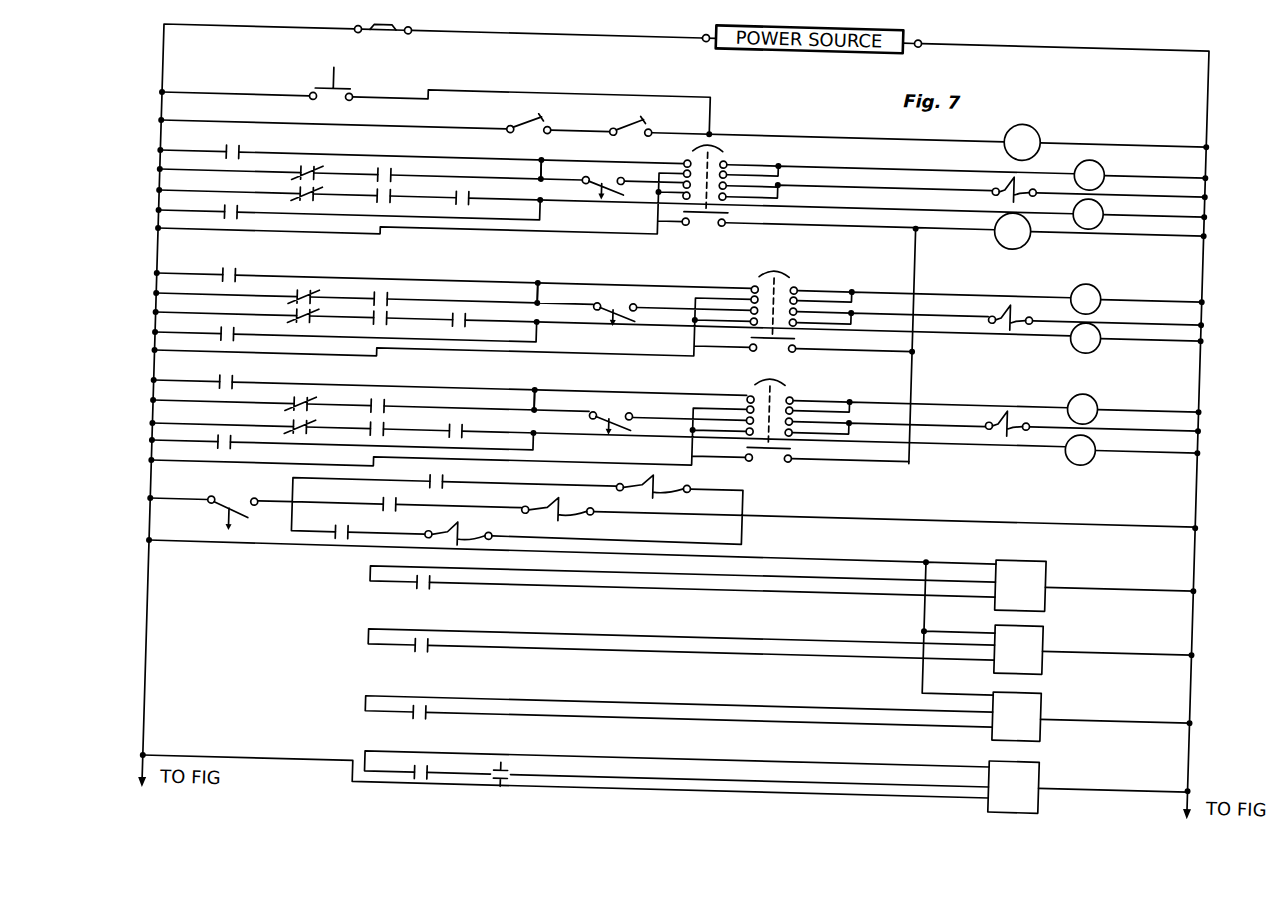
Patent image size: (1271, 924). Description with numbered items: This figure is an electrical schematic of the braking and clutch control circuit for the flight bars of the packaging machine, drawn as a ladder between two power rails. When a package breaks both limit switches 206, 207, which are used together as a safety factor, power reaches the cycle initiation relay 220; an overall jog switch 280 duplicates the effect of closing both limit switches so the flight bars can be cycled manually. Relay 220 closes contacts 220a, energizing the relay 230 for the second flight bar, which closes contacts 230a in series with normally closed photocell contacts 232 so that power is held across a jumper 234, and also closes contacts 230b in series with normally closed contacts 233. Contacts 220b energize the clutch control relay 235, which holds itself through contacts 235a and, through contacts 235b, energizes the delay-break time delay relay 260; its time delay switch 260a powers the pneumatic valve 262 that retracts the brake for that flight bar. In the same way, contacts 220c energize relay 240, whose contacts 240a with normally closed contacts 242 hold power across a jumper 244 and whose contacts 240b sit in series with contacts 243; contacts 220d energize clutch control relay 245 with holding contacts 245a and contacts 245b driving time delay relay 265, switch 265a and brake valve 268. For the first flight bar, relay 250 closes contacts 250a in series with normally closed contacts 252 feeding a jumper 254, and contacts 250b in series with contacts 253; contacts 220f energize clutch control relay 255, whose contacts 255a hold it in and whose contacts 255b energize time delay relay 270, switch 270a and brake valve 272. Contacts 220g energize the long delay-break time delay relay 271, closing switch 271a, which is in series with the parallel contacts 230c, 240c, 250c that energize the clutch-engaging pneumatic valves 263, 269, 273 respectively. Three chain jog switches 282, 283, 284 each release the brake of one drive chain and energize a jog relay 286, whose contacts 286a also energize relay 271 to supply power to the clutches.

The overall jog switch 280 is at (313, 86).
The limit switch 206 is at (534, 113).
The limit switch 207 is at (625, 111).
The cycle initiation relay 220 is at (1040, 108).
The contacts 220a is at (231, 143).
The contacts 220b is at (232, 218).
The contacts 220c is at (236, 266).
The contacts 220d is at (233, 339).
The contacts 220f is at (232, 443).
The contacts 220g is at (441, 752).
The relay 230 is at (1106, 143).
The contacts 230a is at (385, 162).
The contacts 230b is at (391, 205).
The contacts 230c is at (457, 470).
The normally closed contacts 232 is at (309, 162).
The normally closed contacts 233 is at (313, 198).
The jumper 234 is at (543, 150).
The clutch control relay 235 is at (1107, 183).
The contacts 235a is at (466, 182).
The contacts 235b is at (439, 583).
The relay 240 is at (1106, 266).
The contacts 240a is at (316, 286).
The contacts 240b is at (391, 320).
The contacts 240c is at (401, 494).
The normally closed contacts 242 is at (383, 289).
The normally closed contacts 243 is at (306, 321).
The jumper 244 is at (548, 284).
The clutch control relay 245 is at (1106, 325).
The contacts 245a is at (467, 321).
The contacts 245b is at (438, 647).
The relay 250 is at (1082, 373).
The contacts 250a is at (391, 395).
The contacts 250b is at (393, 425).
The contacts 250c is at (350, 531).
The normally closed contacts 252 is at (298, 406).
The normally closed contacts 253 is at (308, 432).
The jumper 254 is at (550, 392).
The clutch control relay 255 is at (1104, 438).
The contacts 255a is at (468, 418).
The contacts 255b is at (437, 713).
The time delay relay 260 is at (1061, 546).
The time delay switch 260a is at (608, 166).
The pneumatic valve 262 is at (996, 173).
The pneumatic valve 263 is at (689, 470).
The time delay relay 265 is at (1060, 606).
The time delay switch 265a is at (621, 304).
The pneumatic valve 268 is at (996, 296).
The pneumatic valve 269 is at (596, 508).
The time delay relay 270 is at (1060, 673).
The time delay switch 270a is at (623, 409).
The time delay relay 271 is at (1060, 742).
The switch 271a is at (236, 494).
The pneumatic valve 272 is at (996, 405).
The pneumatic valve 273 is at (506, 522).
The chain jog switch 282 is at (737, 131).
The chain jog switch 283 is at (810, 255).
The chain jog switch 284 is at (806, 365).
The jog relay 286 is at (1031, 222).
The contacts 286a is at (530, 764).